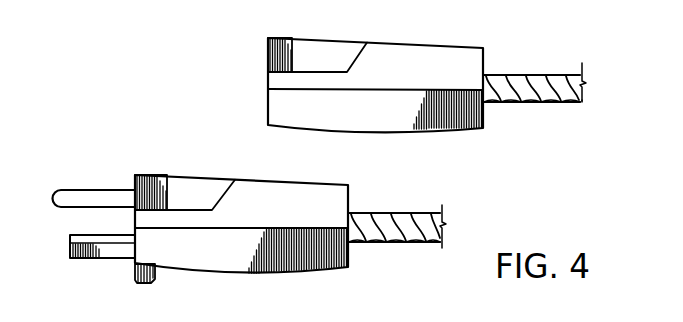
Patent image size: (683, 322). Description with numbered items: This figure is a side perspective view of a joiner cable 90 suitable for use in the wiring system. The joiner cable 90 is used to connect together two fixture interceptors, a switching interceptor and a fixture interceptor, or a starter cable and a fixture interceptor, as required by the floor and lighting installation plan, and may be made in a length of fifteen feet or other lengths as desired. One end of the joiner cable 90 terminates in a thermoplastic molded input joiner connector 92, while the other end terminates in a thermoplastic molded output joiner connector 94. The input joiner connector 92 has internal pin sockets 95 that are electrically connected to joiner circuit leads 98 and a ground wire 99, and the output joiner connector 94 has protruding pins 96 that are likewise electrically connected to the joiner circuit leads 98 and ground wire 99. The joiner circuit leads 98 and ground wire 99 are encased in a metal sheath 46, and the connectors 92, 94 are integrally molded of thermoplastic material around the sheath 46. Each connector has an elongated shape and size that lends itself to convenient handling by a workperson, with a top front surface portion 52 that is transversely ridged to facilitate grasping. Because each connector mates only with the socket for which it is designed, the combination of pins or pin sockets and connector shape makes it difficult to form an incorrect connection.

The metal sheath 46 is at (523, 75).
The top front surface portion 52 is at (334, 22).
The joiner cable 90 is at (585, 63).
The input joiner connector 92 is at (397, 68).
The output joiner connector 94 is at (282, 247).
The internal pin sockets 95 is at (268, 86).
The protruding pins 96 is at (112, 248).
The joiner circuit leads 98 is at (582, 102).
The ground wire 99 is at (445, 233).